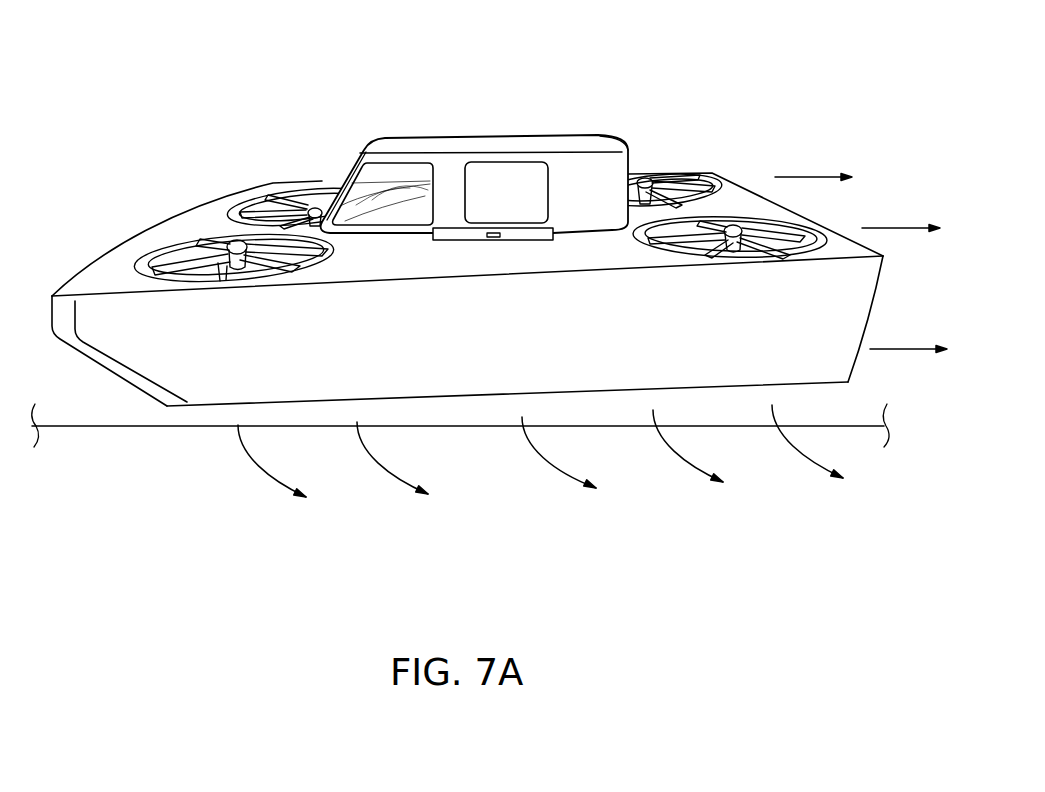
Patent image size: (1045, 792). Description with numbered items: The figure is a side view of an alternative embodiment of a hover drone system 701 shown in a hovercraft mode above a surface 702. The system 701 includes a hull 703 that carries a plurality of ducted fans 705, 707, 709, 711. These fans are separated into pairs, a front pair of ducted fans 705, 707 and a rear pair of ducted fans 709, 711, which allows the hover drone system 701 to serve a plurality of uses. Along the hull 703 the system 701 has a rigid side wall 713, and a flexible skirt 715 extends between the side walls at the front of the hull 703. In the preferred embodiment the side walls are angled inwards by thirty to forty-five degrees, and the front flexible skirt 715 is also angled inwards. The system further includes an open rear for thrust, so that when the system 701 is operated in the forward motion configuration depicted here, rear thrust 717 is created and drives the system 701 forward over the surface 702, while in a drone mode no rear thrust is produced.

The hover drone system 701 is at (127, 62).
The surface 702 is at (65, 427).
The hull 703 is at (160, 240).
The ducted fan 705 is at (322, 186).
The ducted fan 707 is at (219, 246).
The ducted fan 709 is at (645, 178).
The ducted fan 711 is at (735, 228).
The rigid side wall 713 is at (472, 394).
The flexible skirt 715 is at (108, 363).
The rear thrust 717 is at (904, 228).